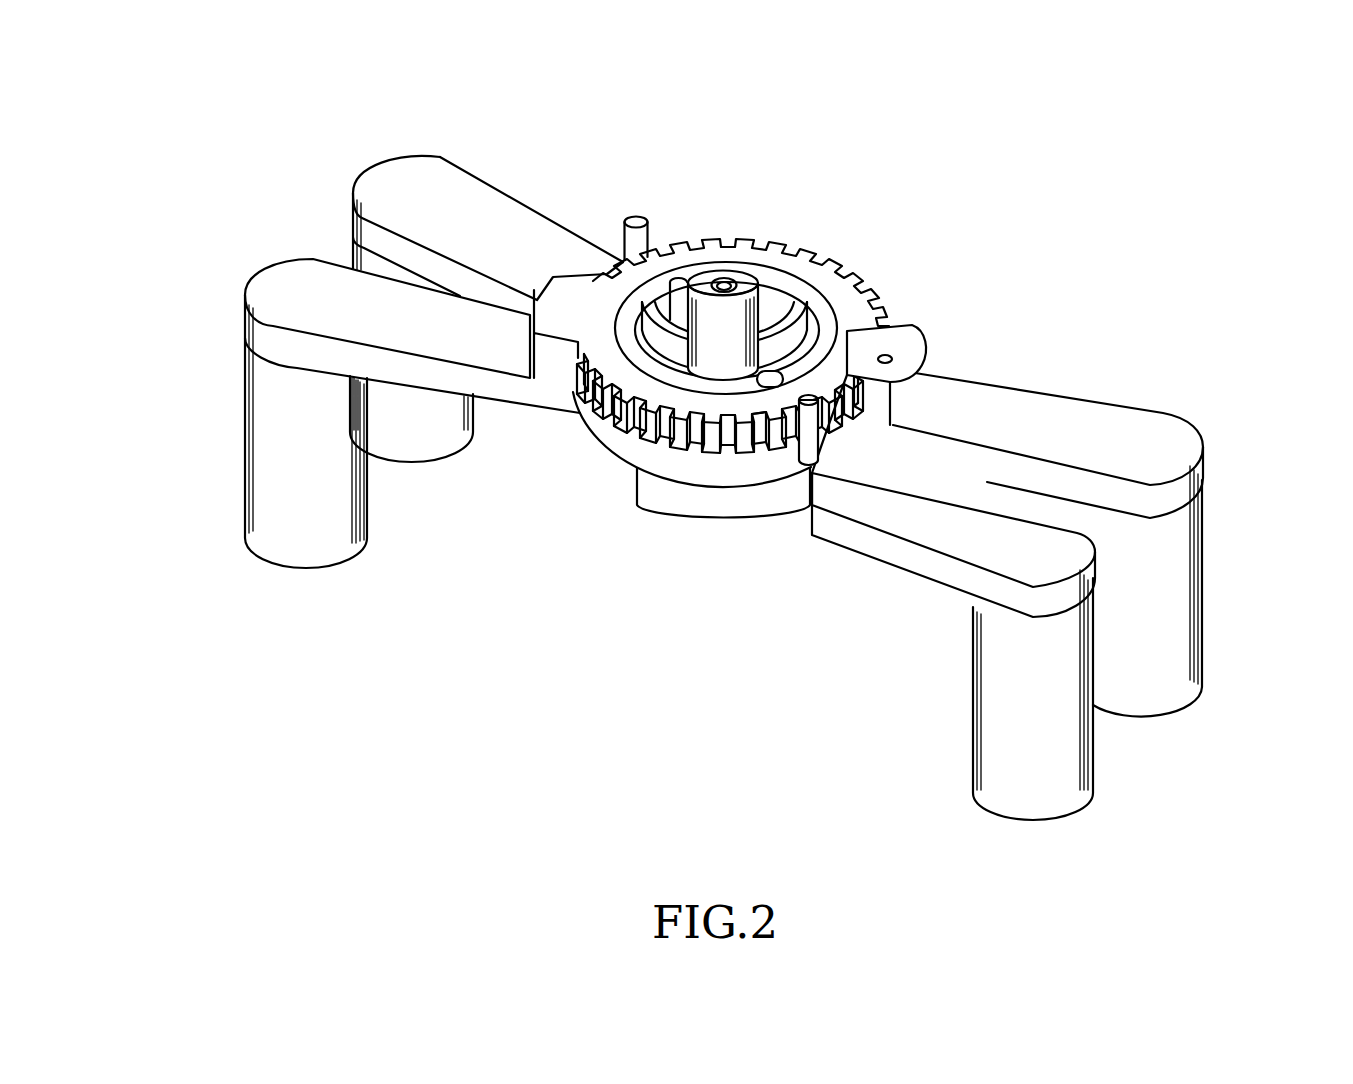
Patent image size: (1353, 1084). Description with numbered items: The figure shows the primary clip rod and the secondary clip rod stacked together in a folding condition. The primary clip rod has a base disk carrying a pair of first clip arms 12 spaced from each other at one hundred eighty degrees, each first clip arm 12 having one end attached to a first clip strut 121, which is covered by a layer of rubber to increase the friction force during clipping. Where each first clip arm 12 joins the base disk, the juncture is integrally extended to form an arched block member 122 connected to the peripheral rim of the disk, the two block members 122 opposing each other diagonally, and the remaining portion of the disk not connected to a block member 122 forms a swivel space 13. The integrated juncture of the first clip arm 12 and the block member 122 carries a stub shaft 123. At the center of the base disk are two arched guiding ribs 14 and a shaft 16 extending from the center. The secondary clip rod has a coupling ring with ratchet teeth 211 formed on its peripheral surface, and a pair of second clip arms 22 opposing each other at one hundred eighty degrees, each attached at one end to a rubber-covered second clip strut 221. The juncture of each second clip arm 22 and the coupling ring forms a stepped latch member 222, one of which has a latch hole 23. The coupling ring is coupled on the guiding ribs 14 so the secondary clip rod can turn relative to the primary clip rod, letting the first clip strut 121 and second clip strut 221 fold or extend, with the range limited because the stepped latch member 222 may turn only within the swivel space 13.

The first clip arm 12 is at (952, 512).
The first clip strut 121 is at (1043, 742).
The arched block member 122 is at (707, 497).
The stub shaft 123 is at (810, 466).
The swivel space 13 is at (622, 483).
The arched guiding rib 14 is at (810, 310).
The shaft 16 is at (722, 323).
The ratchet teeth 211 is at (755, 440).
The second clip arm 22 is at (338, 297).
The second clip strut 221 is at (313, 463).
The stepped latch member 222 is at (907, 380).
The latch hole 23 is at (886, 355).